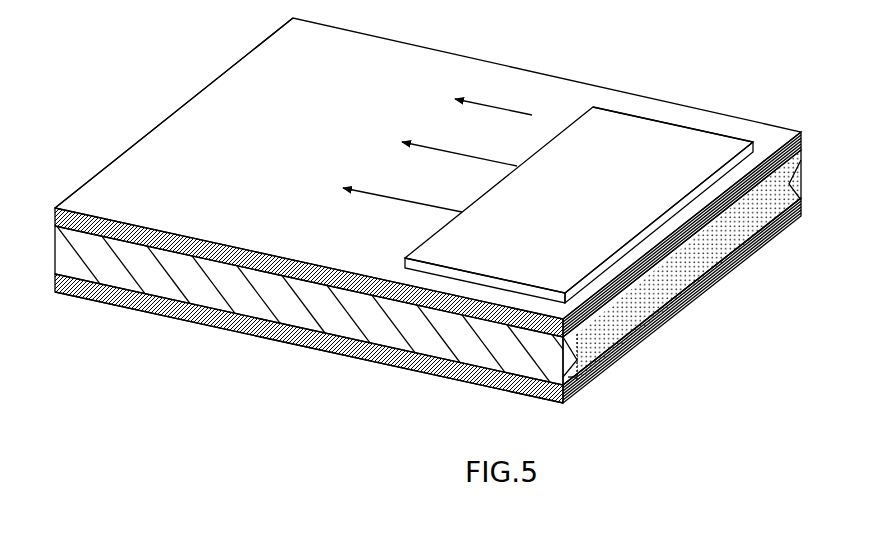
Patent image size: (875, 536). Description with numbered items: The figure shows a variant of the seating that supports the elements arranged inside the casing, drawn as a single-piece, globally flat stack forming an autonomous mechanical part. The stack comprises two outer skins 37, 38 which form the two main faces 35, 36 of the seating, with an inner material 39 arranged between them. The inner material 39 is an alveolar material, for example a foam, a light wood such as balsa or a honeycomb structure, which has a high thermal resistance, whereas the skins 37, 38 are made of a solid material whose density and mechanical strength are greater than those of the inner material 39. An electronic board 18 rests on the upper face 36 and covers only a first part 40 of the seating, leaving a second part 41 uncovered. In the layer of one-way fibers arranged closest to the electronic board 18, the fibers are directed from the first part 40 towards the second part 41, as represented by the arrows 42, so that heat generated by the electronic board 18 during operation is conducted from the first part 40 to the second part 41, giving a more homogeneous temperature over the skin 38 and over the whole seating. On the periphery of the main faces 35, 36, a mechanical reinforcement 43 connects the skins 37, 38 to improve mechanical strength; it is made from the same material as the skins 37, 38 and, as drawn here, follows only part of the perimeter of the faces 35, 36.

The electronic board 18 is at (603, 203).
The main face 35 is at (102, 305).
The main face 36 is at (146, 173).
The outer skin 37 is at (780, 233).
The outer skin 38 is at (802, 140).
The inner material 39 is at (678, 280).
The first part 40 is at (660, 120).
The second part 41 is at (301, 144).
The arrows 42 is at (532, 115).
The mechanical reinforcement 43 is at (793, 187).